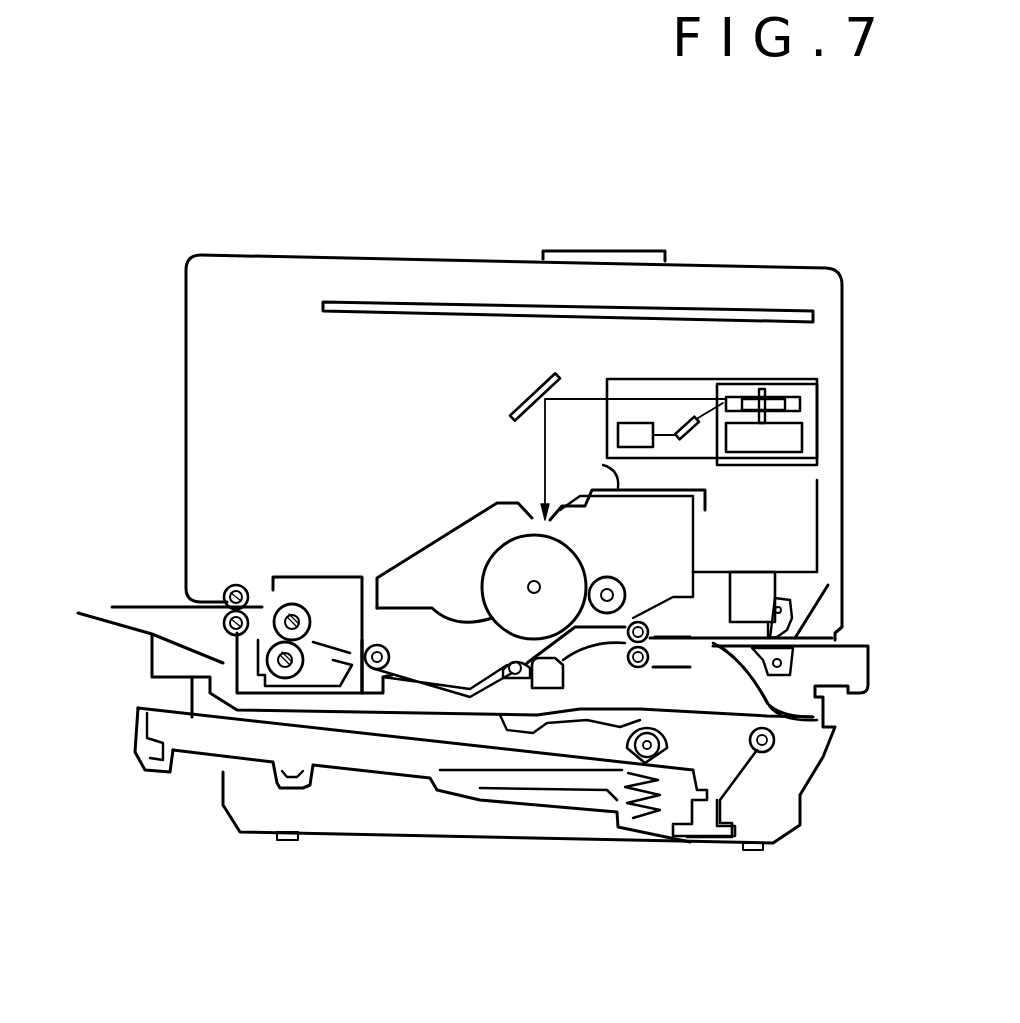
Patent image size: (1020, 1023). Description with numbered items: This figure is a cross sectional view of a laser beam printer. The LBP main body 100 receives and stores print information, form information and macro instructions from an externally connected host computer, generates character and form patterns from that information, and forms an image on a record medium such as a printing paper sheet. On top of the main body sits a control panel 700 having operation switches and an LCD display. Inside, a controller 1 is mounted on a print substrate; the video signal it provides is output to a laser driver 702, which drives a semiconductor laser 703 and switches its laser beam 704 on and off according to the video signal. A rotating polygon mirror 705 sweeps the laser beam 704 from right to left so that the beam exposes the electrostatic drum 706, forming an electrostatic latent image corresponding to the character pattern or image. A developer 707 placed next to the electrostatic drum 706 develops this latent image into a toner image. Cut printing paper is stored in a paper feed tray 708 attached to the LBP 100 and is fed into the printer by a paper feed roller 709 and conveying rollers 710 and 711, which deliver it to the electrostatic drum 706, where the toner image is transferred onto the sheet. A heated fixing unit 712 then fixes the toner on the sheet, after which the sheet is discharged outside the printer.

The controller 1 is at (813, 316).
The LBP main body 100 is at (762, 266).
The control panel 700 is at (605, 251).
The laser driver 702 is at (617, 438).
The semiconductor laser 703 is at (688, 437).
The laser beam 704 is at (697, 400).
The rotating polygon mirror 705 is at (787, 398).
The electrostatic drum 706 is at (510, 553).
The developer 707 is at (425, 562).
The paper feed tray 708 is at (135, 725).
The paper feed roller 709 is at (625, 752).
The conveying roller 710 is at (762, 752).
The conveying roller 711 is at (632, 667).
The fixing unit 712 is at (297, 603).